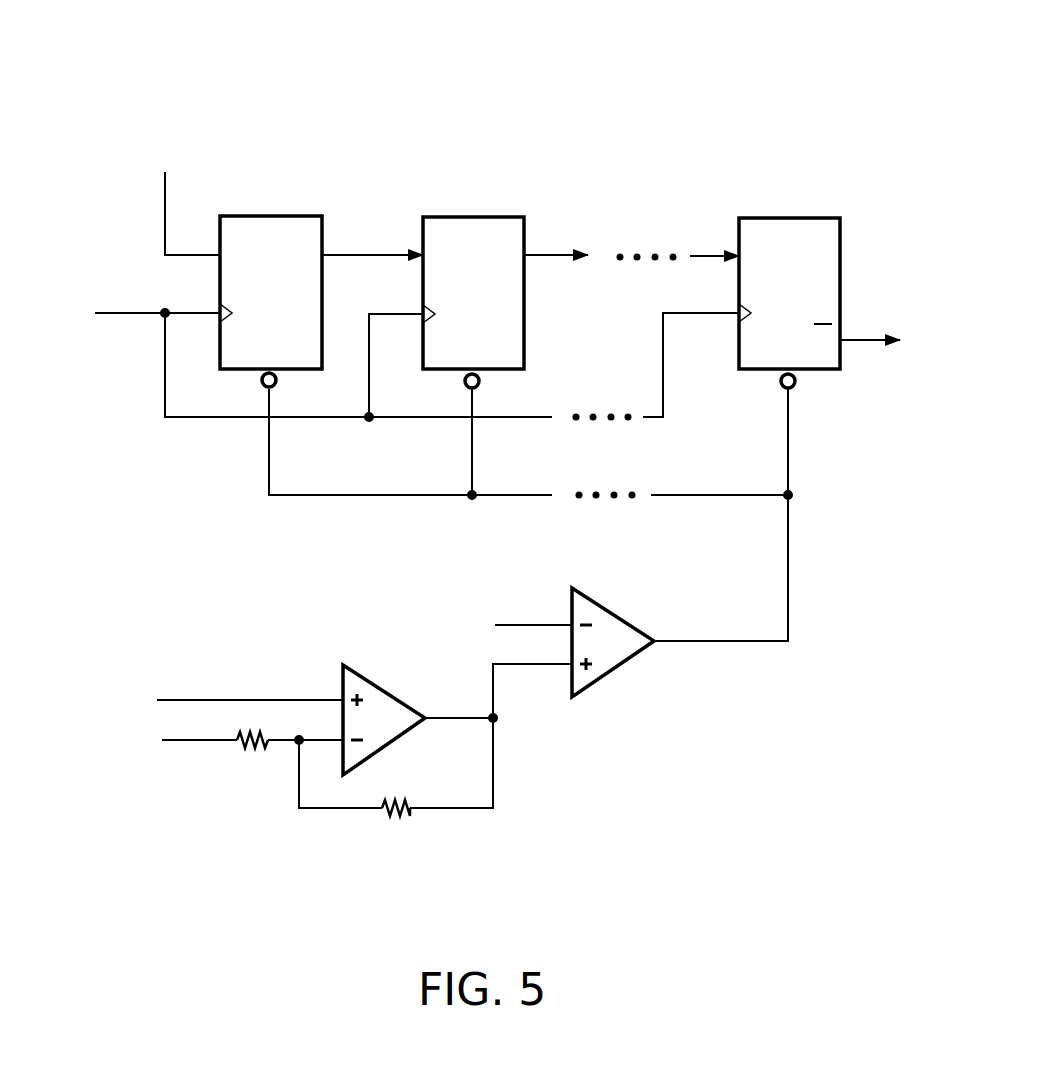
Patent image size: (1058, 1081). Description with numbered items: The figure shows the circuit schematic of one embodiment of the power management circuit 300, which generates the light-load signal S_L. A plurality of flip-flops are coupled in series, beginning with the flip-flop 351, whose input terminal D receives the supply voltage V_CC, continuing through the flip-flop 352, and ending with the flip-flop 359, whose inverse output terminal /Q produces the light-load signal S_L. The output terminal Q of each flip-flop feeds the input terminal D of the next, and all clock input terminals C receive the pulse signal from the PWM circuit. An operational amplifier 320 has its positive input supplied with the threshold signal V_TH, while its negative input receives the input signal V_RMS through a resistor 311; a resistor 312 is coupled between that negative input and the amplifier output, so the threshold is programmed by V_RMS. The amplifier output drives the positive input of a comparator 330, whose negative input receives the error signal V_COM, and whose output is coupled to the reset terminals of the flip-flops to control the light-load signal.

The power management circuit 300 is at (898, 61).
The flip-flop 351 is at (290, 215).
The flip-flop 352 is at (480, 216).
The flip-flop 359 is at (810, 217).
The comparator 330 is at (573, 591).
The operational amplifier 320 is at (344, 668).
The resistor 311 is at (280, 764).
The resistor 312 is at (407, 815).